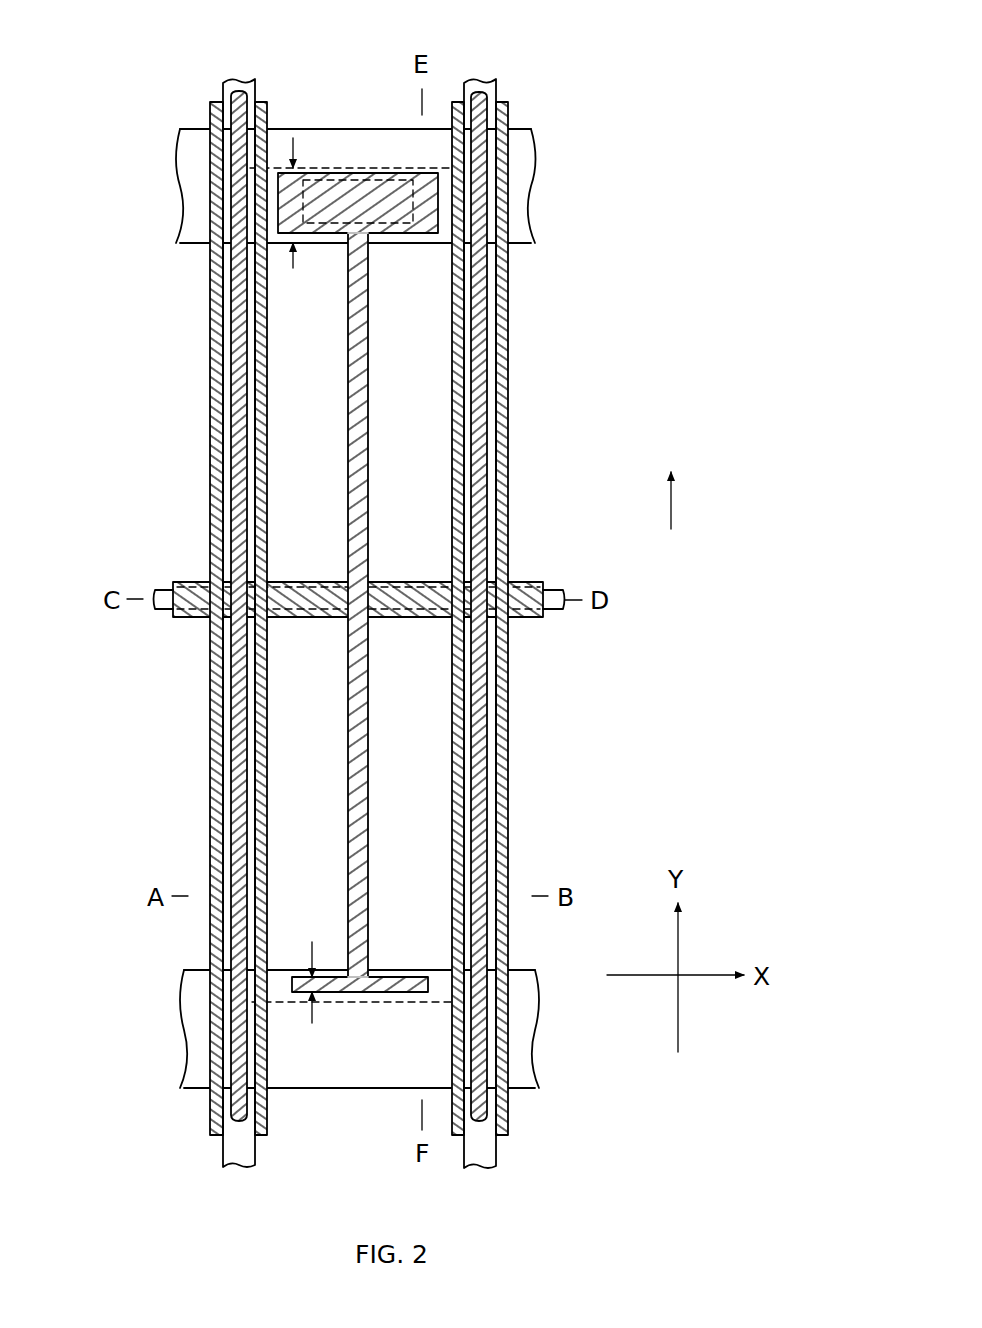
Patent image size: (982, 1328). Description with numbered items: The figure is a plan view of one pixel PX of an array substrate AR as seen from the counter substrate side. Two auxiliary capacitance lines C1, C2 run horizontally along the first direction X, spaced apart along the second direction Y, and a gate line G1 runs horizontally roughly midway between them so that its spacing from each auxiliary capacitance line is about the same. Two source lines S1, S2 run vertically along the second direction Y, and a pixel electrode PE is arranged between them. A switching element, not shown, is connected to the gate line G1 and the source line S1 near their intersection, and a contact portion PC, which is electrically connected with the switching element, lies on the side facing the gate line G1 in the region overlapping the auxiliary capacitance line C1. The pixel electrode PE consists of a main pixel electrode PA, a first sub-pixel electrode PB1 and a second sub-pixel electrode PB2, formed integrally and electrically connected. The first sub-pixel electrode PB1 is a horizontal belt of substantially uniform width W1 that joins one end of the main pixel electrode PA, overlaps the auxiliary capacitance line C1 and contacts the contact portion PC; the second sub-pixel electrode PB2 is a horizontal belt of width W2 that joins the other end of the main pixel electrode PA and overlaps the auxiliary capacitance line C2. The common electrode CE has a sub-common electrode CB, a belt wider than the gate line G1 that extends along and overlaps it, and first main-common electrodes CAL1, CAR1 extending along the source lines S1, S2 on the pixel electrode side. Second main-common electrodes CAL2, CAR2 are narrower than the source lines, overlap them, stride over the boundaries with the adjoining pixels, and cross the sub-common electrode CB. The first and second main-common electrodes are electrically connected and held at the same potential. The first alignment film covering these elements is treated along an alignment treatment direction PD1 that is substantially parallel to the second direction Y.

The source line S1 is at (243, 79).
The source line S2 is at (490, 79).
The gate line G1 is at (168, 612).
The auxiliary capacitance line C1 is at (180, 184).
The auxiliary capacitance line C2 is at (183, 1028).
The sub-common electrode CB is at (408, 618).
The pixel PX is at (487, 166).
The pixel electrode PE is at (422, 582).
The main pixel electrode PA is at (370, 506).
The first sub-pixel electrode PB1 is at (419, 234).
The second sub-pixel electrode PB2 is at (407, 975).
The contact portion PC is at (337, 228).
The width of first sub-pixel electrode W1 is at (284, 187).
The width of second sub-pixel electrode W2 is at (312, 1001).
The first main-common electrode CAL1 is at (259, 766).
The second main-common electrode CAL2 is at (235, 808).
The first main-common electrode CAR1 is at (463, 701).
The second main-common electrode CAR2 is at (487, 739).
The common electrode CE is at (242, 1124).
The array substrate AR is at (574, 51).
The alignment treatment direction PD1 is at (672, 498).